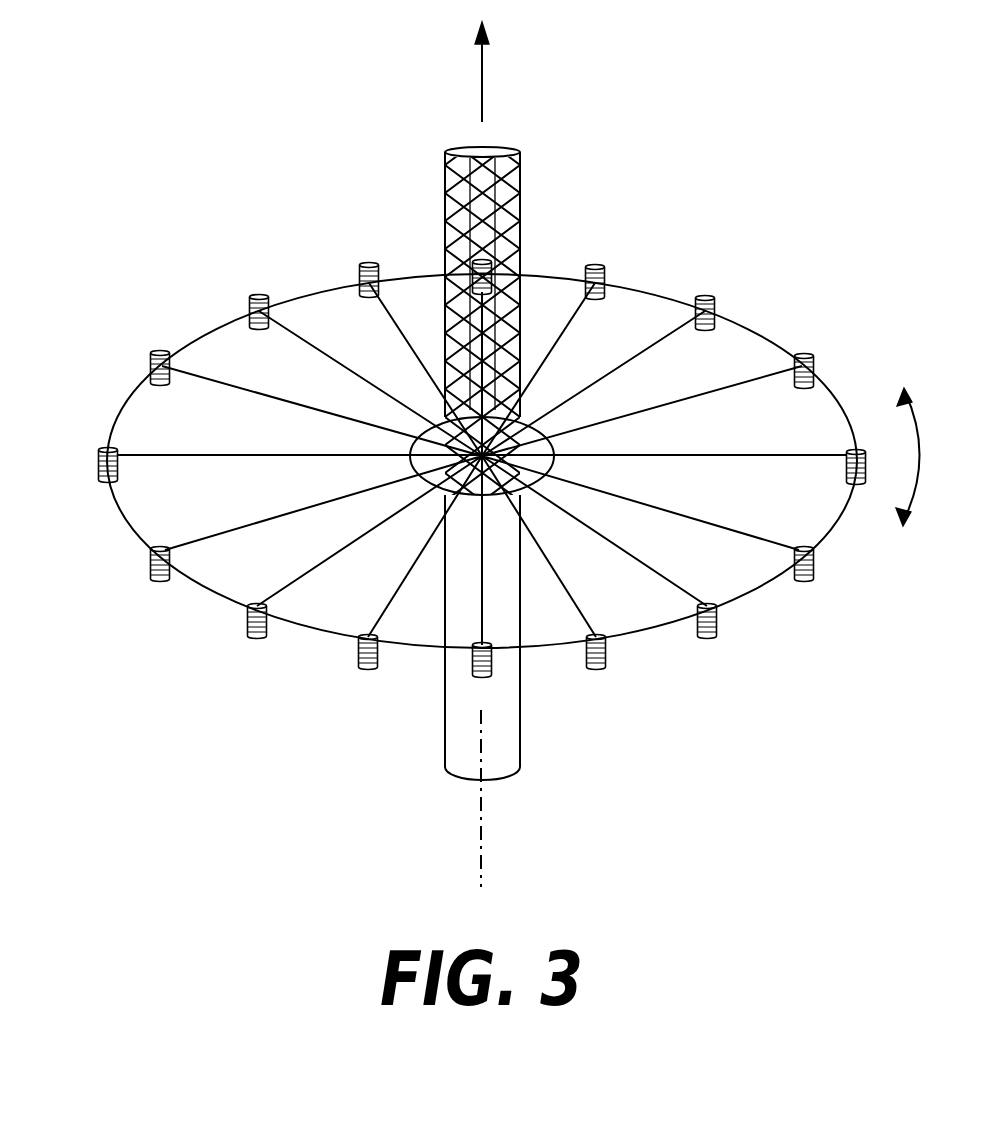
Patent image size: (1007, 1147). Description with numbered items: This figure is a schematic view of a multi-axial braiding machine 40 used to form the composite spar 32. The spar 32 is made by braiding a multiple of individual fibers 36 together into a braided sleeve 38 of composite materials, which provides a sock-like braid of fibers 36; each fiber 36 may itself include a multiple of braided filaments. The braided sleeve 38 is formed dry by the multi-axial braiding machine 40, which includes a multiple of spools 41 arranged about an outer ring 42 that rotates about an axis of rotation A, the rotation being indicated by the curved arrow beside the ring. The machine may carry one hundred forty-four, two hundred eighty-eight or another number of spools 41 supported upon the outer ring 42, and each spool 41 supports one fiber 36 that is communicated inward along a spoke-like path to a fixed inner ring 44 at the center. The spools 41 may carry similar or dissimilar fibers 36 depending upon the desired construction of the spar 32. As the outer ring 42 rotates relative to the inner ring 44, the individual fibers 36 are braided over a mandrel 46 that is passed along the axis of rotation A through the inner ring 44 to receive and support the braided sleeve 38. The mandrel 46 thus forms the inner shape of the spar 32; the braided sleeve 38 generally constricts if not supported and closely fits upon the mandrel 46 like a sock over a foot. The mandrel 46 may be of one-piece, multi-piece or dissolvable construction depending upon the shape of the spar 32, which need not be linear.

The spar 32 is at (552, 170).
The fibers 36 is at (697, 395).
The braided sleeve 38 is at (521, 228).
The multi-axial braiding machine 40 is at (860, 332).
The spools 41 is at (258, 640).
The outer ring 42 is at (123, 513).
The inner ring 44 is at (410, 462).
The mandrel 46 is at (505, 718).
The axis of rotation A is at (483, 832).